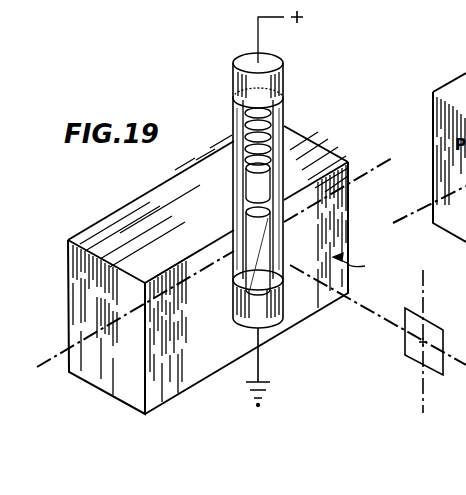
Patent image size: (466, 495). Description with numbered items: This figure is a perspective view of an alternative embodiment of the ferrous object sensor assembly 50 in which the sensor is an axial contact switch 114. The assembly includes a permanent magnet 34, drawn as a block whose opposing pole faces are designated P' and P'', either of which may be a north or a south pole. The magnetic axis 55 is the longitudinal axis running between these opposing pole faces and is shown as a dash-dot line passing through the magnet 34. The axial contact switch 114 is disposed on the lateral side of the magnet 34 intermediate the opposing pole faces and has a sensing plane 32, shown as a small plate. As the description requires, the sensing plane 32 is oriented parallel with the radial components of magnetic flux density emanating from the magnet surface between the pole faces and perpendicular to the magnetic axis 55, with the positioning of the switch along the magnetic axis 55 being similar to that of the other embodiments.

The ferrous object sensor assembly 50 is at (158, 172).
The permanent magnet 34 is at (197, 356).
The magnetic axis 55 is at (365, 166).
The axial contact switch 114 is at (286, 109).
The sensing plane 32 is at (407, 345).